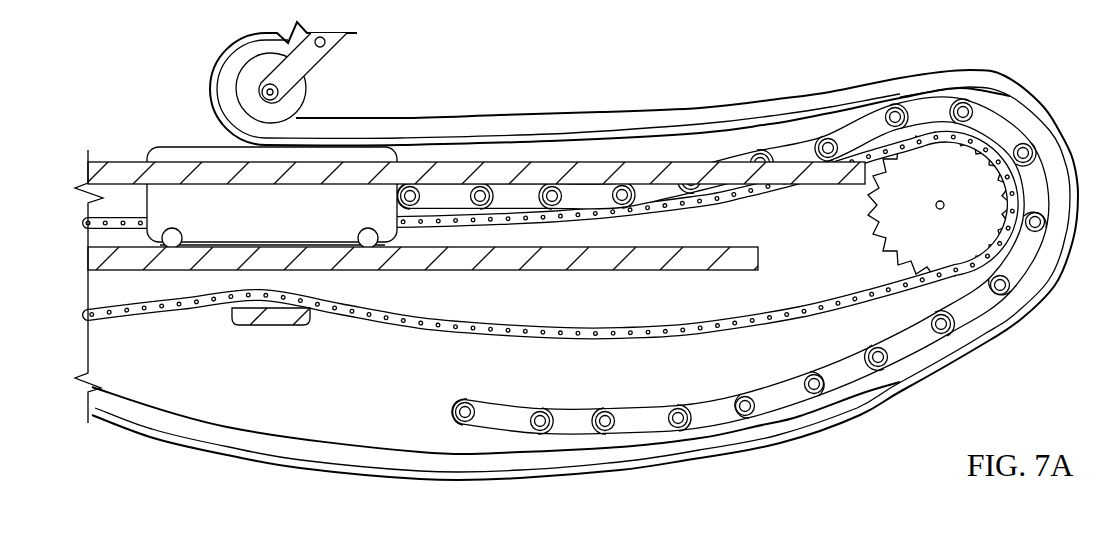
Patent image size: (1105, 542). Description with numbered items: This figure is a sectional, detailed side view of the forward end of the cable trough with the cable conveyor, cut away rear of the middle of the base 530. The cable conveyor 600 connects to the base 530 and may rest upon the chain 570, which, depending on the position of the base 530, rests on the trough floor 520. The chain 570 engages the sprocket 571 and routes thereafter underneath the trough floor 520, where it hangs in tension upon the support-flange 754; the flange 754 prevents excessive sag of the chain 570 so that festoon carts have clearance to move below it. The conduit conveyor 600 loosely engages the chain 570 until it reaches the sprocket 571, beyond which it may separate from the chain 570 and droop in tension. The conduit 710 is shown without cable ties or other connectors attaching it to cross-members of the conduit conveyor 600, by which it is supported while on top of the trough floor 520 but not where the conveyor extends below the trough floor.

The base 530 is at (176, 146).
The conduit 710 is at (528, 117).
The sprocket 571 is at (868, 208).
The trough floor 520 is at (762, 256).
The support-flange 754 is at (270, 326).
The chain 570 is at (463, 337).
The cable conveyor 600 is at (640, 402).